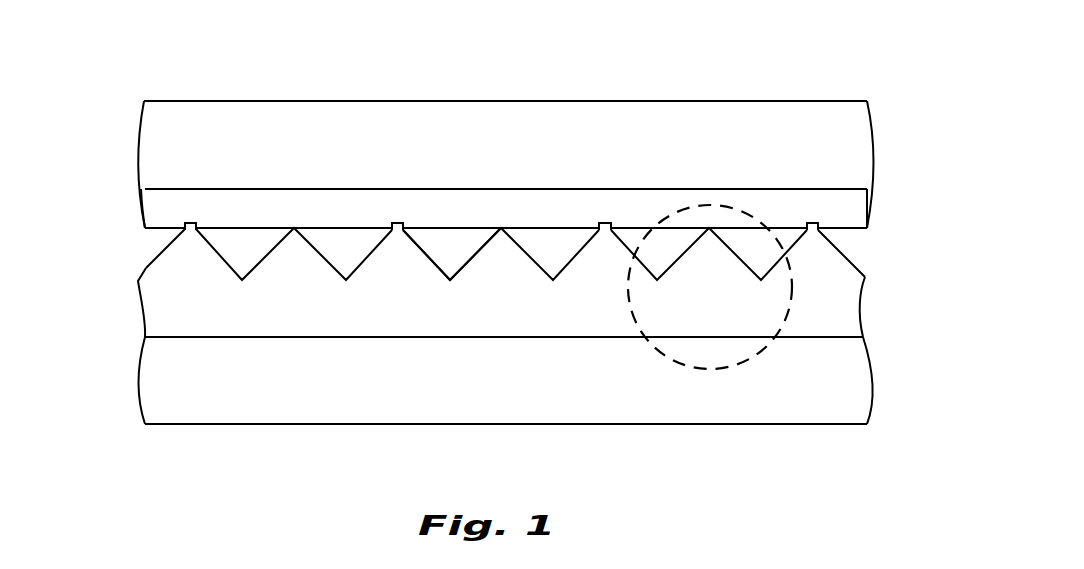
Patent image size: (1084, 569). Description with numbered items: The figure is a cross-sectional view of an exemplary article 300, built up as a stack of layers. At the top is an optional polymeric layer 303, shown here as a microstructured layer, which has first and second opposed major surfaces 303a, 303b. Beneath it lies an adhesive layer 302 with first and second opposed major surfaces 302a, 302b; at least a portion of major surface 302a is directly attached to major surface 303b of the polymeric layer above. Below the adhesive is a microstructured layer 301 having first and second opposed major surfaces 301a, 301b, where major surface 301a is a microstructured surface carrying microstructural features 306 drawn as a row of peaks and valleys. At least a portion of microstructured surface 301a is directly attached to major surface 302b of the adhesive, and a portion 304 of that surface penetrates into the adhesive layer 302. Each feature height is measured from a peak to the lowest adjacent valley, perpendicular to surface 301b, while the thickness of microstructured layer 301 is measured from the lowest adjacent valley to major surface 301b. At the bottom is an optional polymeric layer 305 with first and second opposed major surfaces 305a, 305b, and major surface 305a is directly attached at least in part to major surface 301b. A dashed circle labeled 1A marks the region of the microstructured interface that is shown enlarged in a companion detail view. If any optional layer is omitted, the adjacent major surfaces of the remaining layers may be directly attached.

The article 300 is at (824, 43).
The polymeric layer 303 is at (153, 132).
The first major surface of polymeric layer 303a is at (606, 101).
The second major surface of polymeric layer 303b is at (474, 195).
The adhesive layer 302 is at (160, 212).
The first major surface of adhesive layer 302a is at (850, 188).
The second major surface of adhesive layer 302b is at (857, 228).
The portion of microstructured surface 304 is at (818, 223).
The microstructured layer 301 is at (158, 313).
The first major surface of microstructured layer 301a is at (147, 267).
The second major surface of microstructured layer 301b is at (215, 337).
The polymeric layer 305 is at (158, 383).
The first major surface of polymeric layer 305a is at (302, 338).
The second major surface of polymeric layer 305b is at (823, 424).
The microstructural features 306 is at (498, 267).
The detail region 1A is at (700, 368).